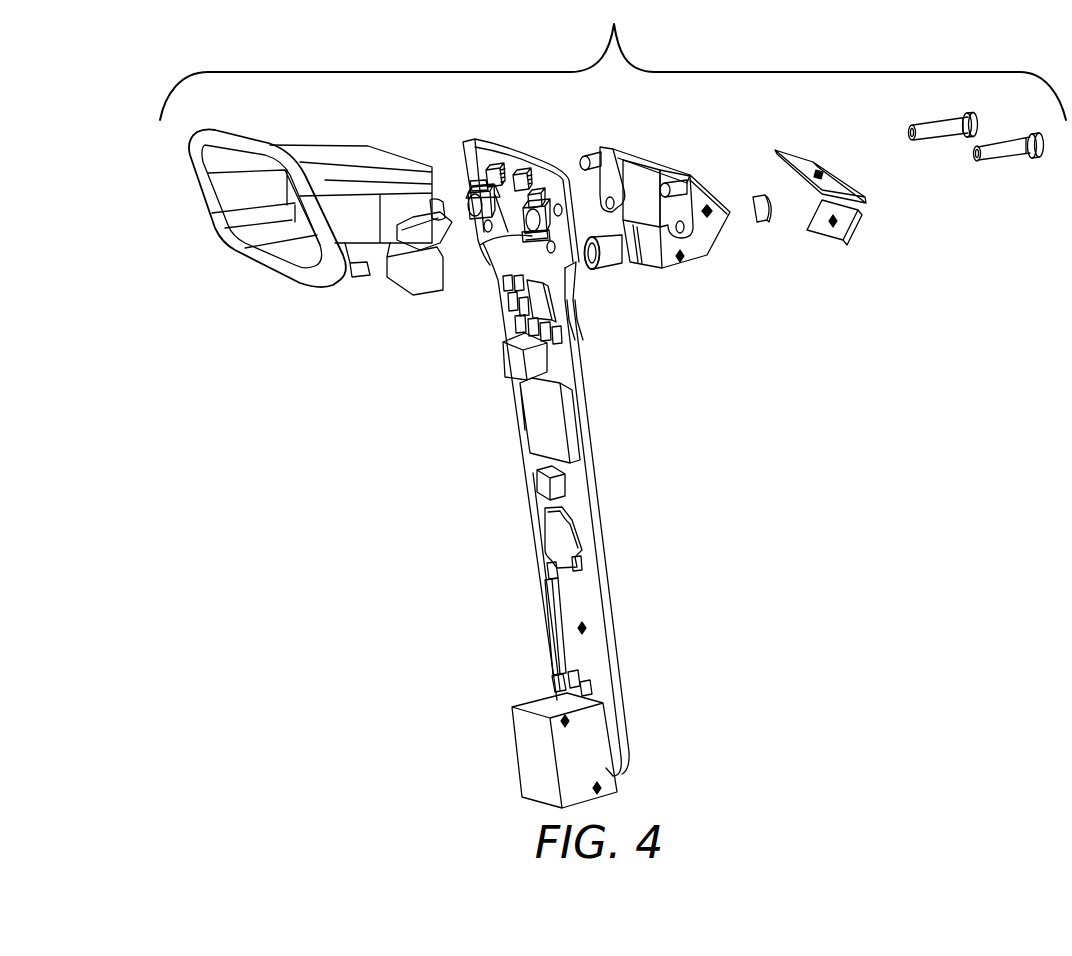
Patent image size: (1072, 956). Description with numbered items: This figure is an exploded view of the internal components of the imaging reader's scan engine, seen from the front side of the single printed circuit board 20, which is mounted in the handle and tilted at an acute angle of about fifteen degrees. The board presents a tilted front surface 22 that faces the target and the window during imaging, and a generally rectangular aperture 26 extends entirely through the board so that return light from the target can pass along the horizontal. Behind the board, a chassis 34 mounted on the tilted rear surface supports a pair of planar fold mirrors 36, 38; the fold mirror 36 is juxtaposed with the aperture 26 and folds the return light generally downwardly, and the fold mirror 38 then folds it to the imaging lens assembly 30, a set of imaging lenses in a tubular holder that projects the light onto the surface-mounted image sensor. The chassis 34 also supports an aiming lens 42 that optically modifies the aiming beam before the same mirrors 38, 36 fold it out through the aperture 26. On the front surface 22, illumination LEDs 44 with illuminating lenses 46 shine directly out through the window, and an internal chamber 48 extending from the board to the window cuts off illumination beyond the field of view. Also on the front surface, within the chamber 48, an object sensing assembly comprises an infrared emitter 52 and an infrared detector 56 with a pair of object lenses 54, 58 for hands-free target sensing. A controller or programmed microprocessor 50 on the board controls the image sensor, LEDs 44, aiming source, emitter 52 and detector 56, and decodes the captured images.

The printed circuit board 20 is at (595, 542).
The tilted front surface 22 is at (583, 607).
The aperture 26 is at (505, 228).
The imaging lens assembly 30 is at (617, 250).
The chassis 34 is at (695, 253).
The fold mirror 36 is at (838, 177).
The fold mirror 38 is at (825, 227).
The aiming lens 42 is at (752, 223).
The illuminating light emitting diodes 44 is at (470, 190).
The illuminating lenses 46 is at (468, 198).
The internal chamber 48 is at (362, 262).
The controller or programmed microprocessor 50 is at (552, 428).
The infrared emitter 52 is at (532, 198).
The object lens 54 is at (522, 178).
The infrared detector 56 is at (514, 174).
The object lens 58 is at (488, 168).